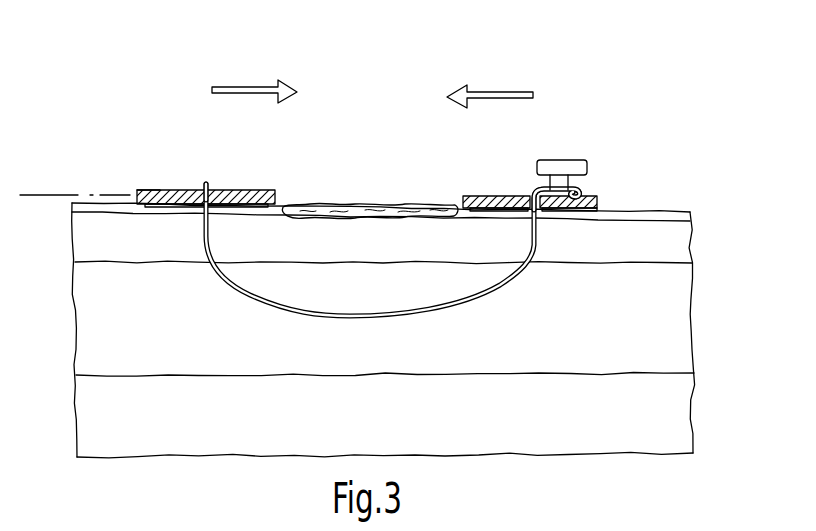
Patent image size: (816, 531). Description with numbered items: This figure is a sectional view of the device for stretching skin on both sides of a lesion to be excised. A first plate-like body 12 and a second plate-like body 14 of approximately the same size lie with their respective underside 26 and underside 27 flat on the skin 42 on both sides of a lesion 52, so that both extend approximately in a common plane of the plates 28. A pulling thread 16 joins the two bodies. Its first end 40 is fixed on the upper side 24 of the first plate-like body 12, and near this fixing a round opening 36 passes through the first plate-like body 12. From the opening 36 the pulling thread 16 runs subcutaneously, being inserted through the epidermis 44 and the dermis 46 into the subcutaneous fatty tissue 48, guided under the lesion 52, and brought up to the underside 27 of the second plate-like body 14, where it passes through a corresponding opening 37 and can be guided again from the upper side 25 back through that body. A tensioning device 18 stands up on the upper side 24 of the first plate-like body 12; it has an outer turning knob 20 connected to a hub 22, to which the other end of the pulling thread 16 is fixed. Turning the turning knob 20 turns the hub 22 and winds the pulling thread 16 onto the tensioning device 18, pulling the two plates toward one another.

The first plate-like body 12 is at (511, 199).
The second plate-like body 14 is at (243, 193).
The pulling thread 16 is at (478, 296).
The tensioning device 18 is at (620, 113).
The turning knob 20 is at (572, 167).
The hub 22 is at (598, 187).
The upper side of the first plate-like body 24 is at (485, 196).
The upper side of the second plate-like body 25 is at (154, 190).
The underside of the first plate-like body 26 is at (498, 211).
The underside of the second plate-like body 27 is at (180, 206).
The plane of the plates 28 is at (37, 193).
The round opening 36 is at (540, 192).
The opening 37 is at (196, 186).
The first end of the pulling thread 40 is at (565, 211).
The skin 42 is at (415, 287).
The epidermis 44 is at (697, 212).
The dermis 46 is at (682, 238).
The subcutaneous fatty tissue 48 is at (682, 308).
The lesion 52 is at (357, 207).